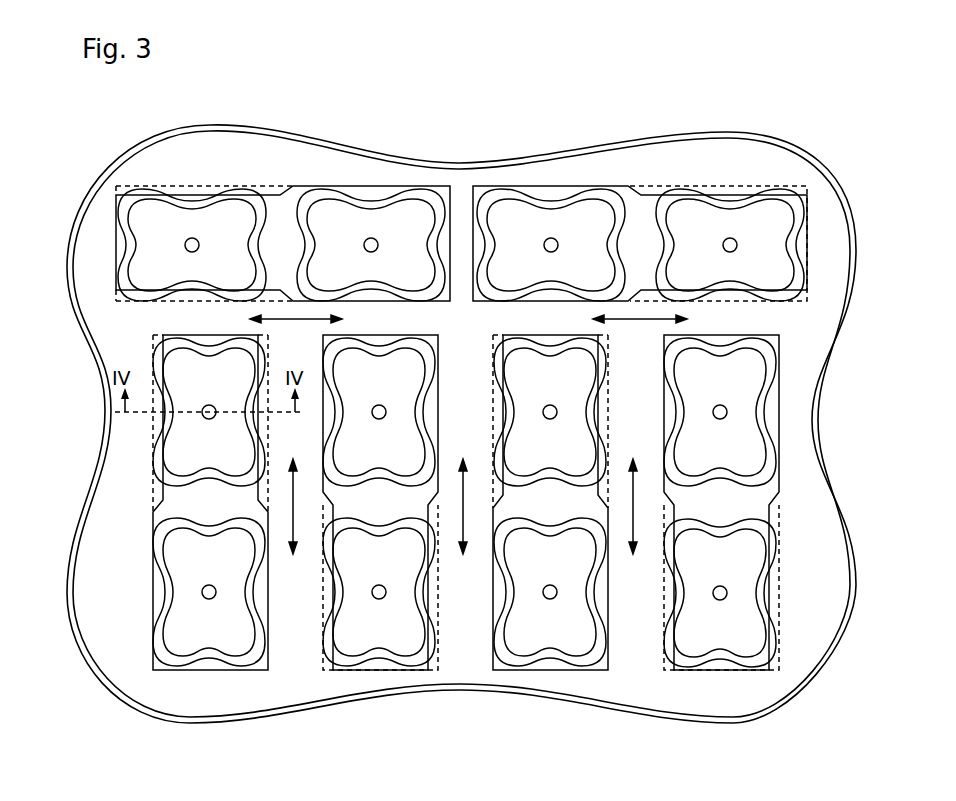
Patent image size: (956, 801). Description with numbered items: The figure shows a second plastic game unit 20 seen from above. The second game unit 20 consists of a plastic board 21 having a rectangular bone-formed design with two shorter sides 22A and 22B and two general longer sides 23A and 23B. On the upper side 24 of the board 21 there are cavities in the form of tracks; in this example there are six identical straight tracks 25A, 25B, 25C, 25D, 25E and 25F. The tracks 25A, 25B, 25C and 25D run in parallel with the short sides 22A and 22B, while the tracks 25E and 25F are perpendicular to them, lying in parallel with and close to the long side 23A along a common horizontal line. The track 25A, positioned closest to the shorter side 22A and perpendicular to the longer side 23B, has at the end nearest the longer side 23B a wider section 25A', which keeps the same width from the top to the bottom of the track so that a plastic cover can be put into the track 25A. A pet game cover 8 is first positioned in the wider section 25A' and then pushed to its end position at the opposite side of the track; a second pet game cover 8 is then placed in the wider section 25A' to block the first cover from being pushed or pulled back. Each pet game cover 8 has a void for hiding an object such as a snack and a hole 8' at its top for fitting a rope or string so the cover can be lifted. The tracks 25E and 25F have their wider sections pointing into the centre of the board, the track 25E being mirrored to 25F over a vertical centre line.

The second plastic game unit 20 is at (474, 136).
The plastic board 21 is at (400, 163).
The shorter side 22A is at (88, 187).
The shorter side 22B is at (842, 190).
The longer side 23A is at (213, 126).
The longer side 23B is at (728, 725).
The upper side 24 is at (268, 158).
The track 25A is at (173, 540).
The wider section 25A' is at (148, 462).
The track 25B is at (352, 500).
The track 25C is at (530, 500).
The track 25D is at (697, 502).
The track 25E is at (277, 208).
The track 25F is at (640, 223).
The pet game cover 8 is at (158, 553).
The hole 8' is at (134, 372).